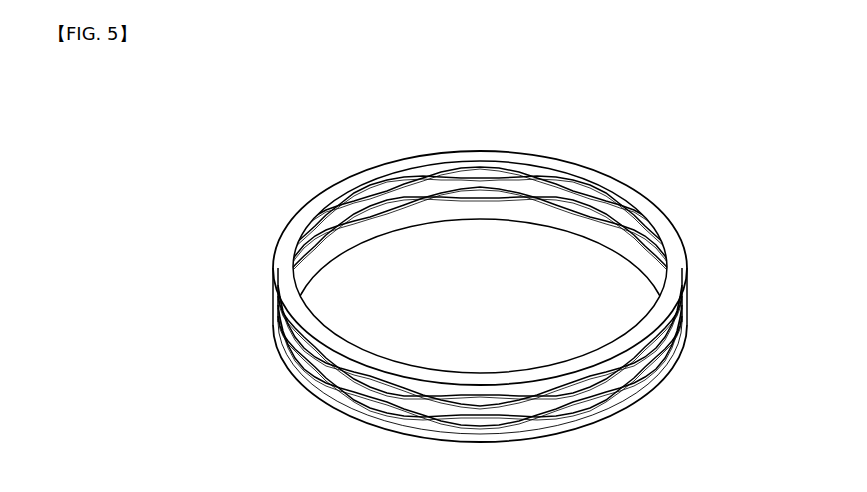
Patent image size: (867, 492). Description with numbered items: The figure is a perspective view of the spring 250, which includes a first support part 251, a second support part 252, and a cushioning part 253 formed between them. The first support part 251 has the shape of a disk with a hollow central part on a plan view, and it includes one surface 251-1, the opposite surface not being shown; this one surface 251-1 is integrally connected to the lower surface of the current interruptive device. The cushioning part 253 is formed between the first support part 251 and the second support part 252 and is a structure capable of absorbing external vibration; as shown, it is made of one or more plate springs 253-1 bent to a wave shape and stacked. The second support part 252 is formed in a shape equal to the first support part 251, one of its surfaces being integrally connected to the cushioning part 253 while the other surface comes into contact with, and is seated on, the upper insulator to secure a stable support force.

The spring 250 is at (323, 158).
The first support part 251 is at (684, 241).
The one surface of the first support part 251-1 is at (652, 208).
The cushioning part 253 is at (697, 258).
The plate spring 253-1 is at (670, 363).
The second support part 252 is at (627, 410).